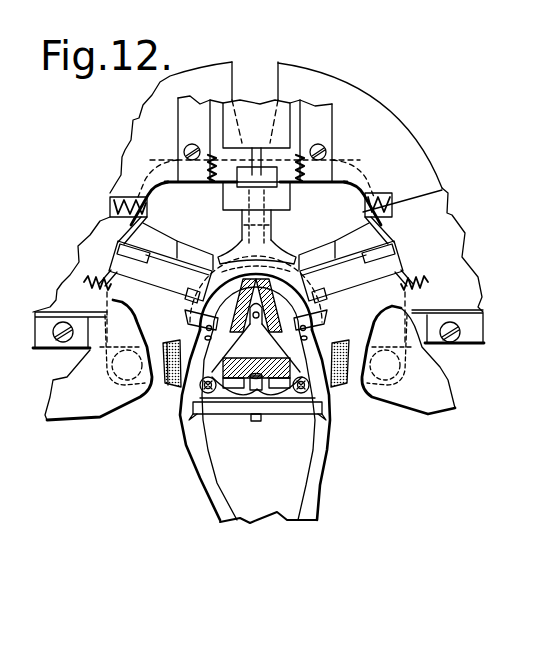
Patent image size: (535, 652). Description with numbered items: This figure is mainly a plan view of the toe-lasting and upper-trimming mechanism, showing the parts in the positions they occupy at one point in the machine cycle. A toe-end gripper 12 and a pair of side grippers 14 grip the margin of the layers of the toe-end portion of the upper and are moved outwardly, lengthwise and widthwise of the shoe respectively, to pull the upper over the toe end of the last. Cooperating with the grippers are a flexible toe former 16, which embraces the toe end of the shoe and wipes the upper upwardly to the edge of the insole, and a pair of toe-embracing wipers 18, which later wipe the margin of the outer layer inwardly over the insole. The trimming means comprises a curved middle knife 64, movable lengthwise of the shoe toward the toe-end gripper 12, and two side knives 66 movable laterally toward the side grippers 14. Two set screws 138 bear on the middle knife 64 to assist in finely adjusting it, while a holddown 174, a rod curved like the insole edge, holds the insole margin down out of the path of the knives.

The toe-end gripper 12 is at (296, 235).
The side grippers 14 is at (193, 248).
The flexible toe former 16 is at (178, 396).
The toe-embracing wipers 18 is at (165, 343).
The middle knife 64 is at (314, 417).
The side knives 66 is at (273, 320).
The set screws 138 is at (300, 382).
The holddown 174 is at (213, 315).